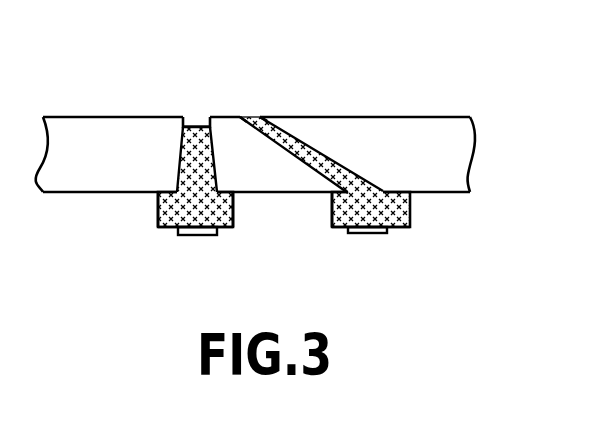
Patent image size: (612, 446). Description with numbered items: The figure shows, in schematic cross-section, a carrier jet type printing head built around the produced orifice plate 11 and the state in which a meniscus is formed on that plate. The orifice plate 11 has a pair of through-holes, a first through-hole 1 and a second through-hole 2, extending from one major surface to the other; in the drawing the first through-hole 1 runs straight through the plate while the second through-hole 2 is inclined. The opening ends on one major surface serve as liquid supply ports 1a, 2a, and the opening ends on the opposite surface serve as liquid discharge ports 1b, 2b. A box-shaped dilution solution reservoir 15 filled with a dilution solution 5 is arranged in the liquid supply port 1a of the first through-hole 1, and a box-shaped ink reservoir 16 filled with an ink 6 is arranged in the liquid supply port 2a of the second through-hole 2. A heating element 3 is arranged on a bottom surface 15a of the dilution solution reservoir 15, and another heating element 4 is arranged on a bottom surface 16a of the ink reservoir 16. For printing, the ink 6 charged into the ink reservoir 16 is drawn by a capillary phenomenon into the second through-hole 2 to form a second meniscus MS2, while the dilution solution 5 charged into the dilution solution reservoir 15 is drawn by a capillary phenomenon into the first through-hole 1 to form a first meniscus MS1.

The first through-hole 1 is at (183, 160).
The liquid supply port 1a is at (160, 207).
The liquid discharge port 1b is at (208, 126).
The second through-hole 2 is at (316, 148).
The liquid supply port 2a is at (420, 192).
The liquid discharge port 2b is at (258, 127).
The heating element 3 is at (205, 236).
The heating element 4 is at (362, 237).
The dilution solution 5 is at (233, 228).
The ink 6 is at (333, 213).
The orifice plate 11 is at (402, 134).
The dilution solution reservoir 15 is at (158, 219).
The bottom surface 15a is at (173, 233).
The ink reservoir 16 is at (411, 214).
The bottom surface 16a is at (397, 229).
The first meniscus MS1 is at (192, 126).
The second meniscus MS2 is at (258, 127).